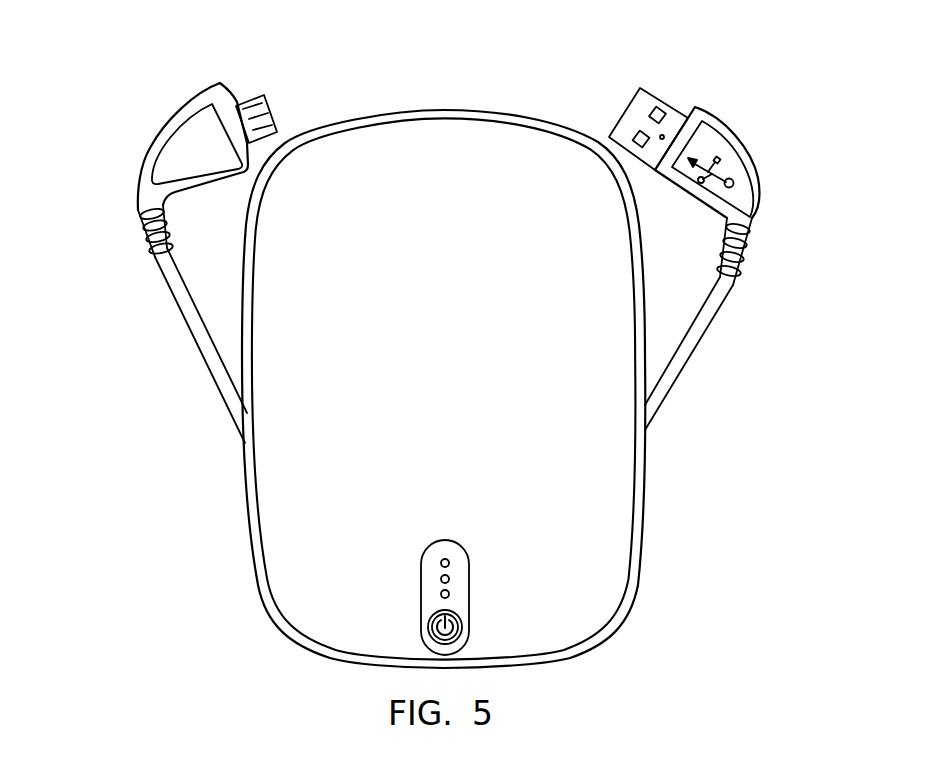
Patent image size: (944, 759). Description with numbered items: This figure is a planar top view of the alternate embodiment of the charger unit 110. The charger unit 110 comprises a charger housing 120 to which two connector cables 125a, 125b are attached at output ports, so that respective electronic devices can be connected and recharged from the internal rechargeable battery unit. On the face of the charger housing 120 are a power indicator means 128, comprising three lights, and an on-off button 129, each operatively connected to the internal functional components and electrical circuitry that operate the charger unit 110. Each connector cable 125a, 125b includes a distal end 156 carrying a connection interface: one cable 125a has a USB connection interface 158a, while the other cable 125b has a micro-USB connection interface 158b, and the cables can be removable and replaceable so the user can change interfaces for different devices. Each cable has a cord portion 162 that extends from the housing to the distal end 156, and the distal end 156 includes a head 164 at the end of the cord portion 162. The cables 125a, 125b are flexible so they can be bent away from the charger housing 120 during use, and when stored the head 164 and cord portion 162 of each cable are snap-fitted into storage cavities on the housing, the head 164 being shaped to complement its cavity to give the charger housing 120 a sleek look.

The charger unit 110 is at (459, 92).
The charger housing 120 is at (280, 520).
The connector cable 125a is at (732, 325).
The connector cable 125b is at (146, 297).
The power indicator means 128 is at (418, 568).
The on-off button 129 is at (464, 618).
The distal end 156 is at (142, 108).
The USB connection interface 158a is at (645, 104).
The micro-USB connection interface 158b is at (249, 102).
The cord portion 162 is at (212, 373).
The head 164 is at (148, 202).